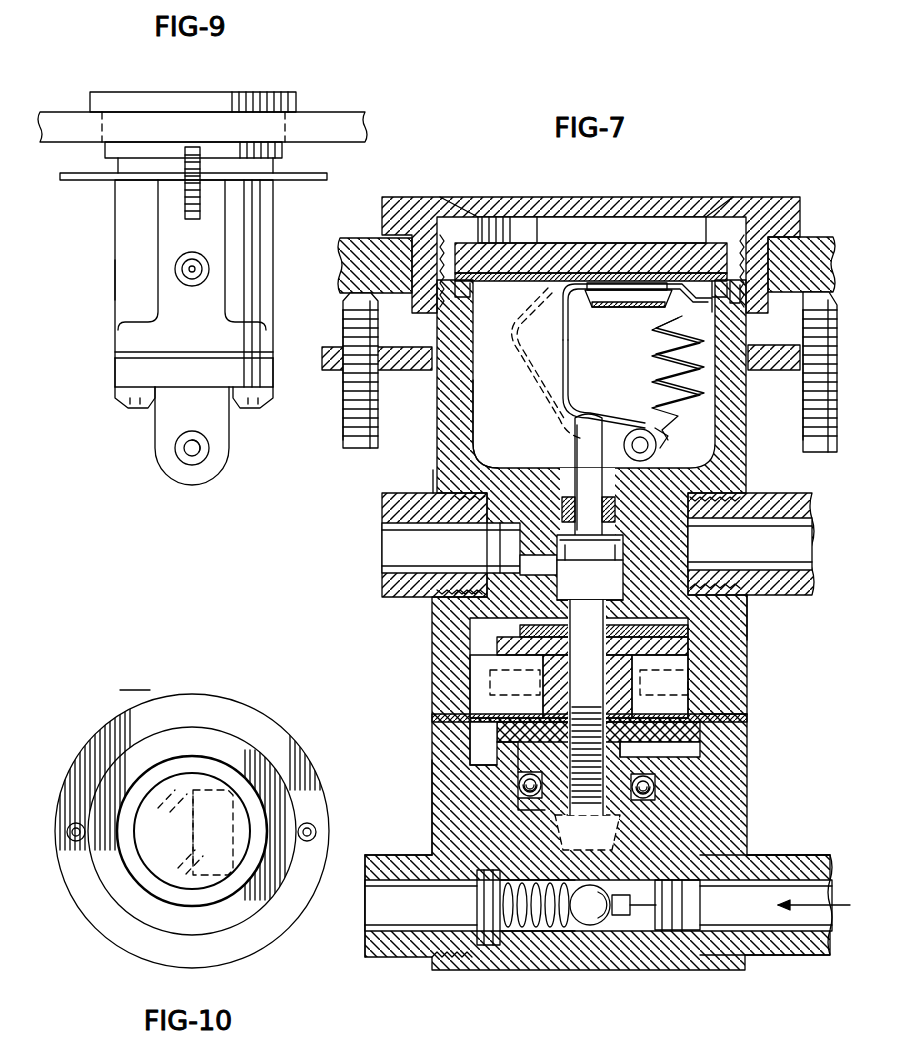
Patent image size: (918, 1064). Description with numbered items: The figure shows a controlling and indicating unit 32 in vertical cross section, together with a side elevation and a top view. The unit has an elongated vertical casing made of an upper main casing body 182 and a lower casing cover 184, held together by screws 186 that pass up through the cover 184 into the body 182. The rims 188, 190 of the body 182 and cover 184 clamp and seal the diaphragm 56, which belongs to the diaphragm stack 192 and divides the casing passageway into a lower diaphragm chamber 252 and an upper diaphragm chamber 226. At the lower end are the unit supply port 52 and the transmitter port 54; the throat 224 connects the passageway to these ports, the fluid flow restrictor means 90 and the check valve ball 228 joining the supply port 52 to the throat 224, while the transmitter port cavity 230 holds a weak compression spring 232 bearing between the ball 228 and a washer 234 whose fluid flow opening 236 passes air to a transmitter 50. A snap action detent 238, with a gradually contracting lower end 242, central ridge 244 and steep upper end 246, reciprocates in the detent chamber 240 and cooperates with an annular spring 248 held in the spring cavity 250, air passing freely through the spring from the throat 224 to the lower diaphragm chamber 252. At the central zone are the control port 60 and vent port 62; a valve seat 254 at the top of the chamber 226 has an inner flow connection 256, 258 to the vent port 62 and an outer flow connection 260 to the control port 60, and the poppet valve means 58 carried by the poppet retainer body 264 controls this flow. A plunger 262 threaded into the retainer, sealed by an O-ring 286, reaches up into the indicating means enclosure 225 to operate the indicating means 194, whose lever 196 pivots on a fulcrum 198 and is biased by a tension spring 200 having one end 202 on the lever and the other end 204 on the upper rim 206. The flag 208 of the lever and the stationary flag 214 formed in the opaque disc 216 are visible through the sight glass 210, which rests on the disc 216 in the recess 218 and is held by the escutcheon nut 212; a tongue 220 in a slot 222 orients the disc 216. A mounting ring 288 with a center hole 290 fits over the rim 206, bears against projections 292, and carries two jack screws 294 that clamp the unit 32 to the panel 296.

In FIG. 9, the controlling and indicating unit 32 is at (83, 266).
In FIG. 7, the controlling and indicating unit 32 is at (350, 490).
In FIG. 10, the controlling and indicating unit 32 is at (100, 700).
In FIG. 7, the transmitter 50 is at (432, 960).
In FIG. 7, the unit supply port 52 is at (705, 958).
In FIG. 9, the transmitter port 54 is at (180, 463).
In FIG. 7, the transmitter port 54 is at (468, 958).
In FIG. 7, the diaphragm 56 is at (470, 692).
In FIG. 7, the poppet valve means 58 is at (497, 646).
In FIG. 7, the unit control port 60 is at (749, 612).
In FIG. 9, the unit vent port 62 is at (183, 256).
In FIG. 7, the unit vent port 62 is at (440, 597).
In FIG. 7, the fluid flow restrictor means 90 is at (635, 915).
In FIG. 9, the main casing body 182 is at (128, 336).
In FIG. 7, the main casing body 182 is at (437, 695).
In FIG. 9, the lower casing cover 184 is at (120, 375).
In FIG. 7, the lower casing cover 184 is at (437, 810).
In FIG. 9, the screws 186 is at (125, 400).
In FIG. 7, the rim of body 188 is at (437, 718).
In FIG. 7, the rim of cover 190 is at (437, 738).
In FIG. 7, the diaphragm stack 192 is at (690, 647).
In FIG. 7, the indicating means 194 is at (550, 362).
In FIG. 7, the indicating lever 196 is at (580, 345).
In FIG. 7, the fulcrum 198 is at (658, 445).
In FIG. 7, the tension spring 200 is at (652, 368).
In FIG. 7, the spring end 202 is at (672, 436).
In FIG. 7, the spring other end 204 is at (696, 284).
In FIG. 7, the upper rim 206 is at (772, 290).
In FIG. 7, the flag 208 is at (612, 300).
In FIG. 7, the sight glass 210 is at (537, 262).
In FIG. 10, the sight glass 210 is at (165, 790).
In FIG. 9, the escutcheon nut 212 is at (285, 100).
In FIG. 7, the escutcheon nut 212 is at (458, 205).
In FIG. 10, the escutcheon nut 212 is at (112, 875).
In FIG. 7, the stationary flag 214 is at (640, 288).
In FIG. 10, the stationary flag 214 is at (245, 765).
In FIG. 7, the opaque disc 216 is at (577, 268).
In FIG. 7, the recess 218 is at (740, 283).
In FIG. 7, the tongue 220 is at (470, 290).
In FIG. 7, the slot 222 is at (438, 318).
In FIG. 7, the throat 224 is at (740, 872).
In FIG. 7, the indicating means enclosure 225 is at (485, 438).
In FIG. 7, the upper diaphragm chamber 226 is at (700, 680).
In FIG. 7, the check valve ball 228 is at (590, 925).
In FIG. 7, the transmitter port cavity 230 is at (548, 928).
In FIG. 7, the compression spring 232 is at (520, 930).
In FIG. 7, the washer 234 is at (480, 870).
In FIG. 9, the fluid flow opening 236 is at (196, 458).
In FIG. 7, the fluid flow opening 236 is at (478, 908).
In FIG. 7, the snap action detent 238 is at (622, 748).
In FIG. 7, the snap action detent chamber 240 is at (620, 833).
In FIG. 7, the detent lower end 242 is at (660, 808).
In FIG. 7, the snap action ridge 244 is at (645, 768).
In FIG. 7, the detent upper end 246 is at (542, 772).
In FIG. 7, the annular spring 248 is at (517, 797).
In FIG. 7, the spring cavity 250 is at (515, 780).
In FIG. 7, the lower diaphragm chamber 252 is at (705, 716).
In FIG. 7, the valve seat 254 is at (520, 631).
In FIG. 7, the inner flow connection 256 is at (590, 586).
In FIG. 9, the inner flow connection 258 is at (183, 271).
In FIG. 7, the inner flow connection 258 is at (520, 570).
In FIG. 7, the outer flow connection 260 is at (690, 592).
In FIG. 7, the plunger 262 is at (574, 455).
In FIG. 7, the poppet retainer body 264 is at (590, 567).
In FIG. 7, the O-ring 286 is at (618, 504).
In FIG. 10, the O-ring 286 is at (208, 800).
In FIG. 9, the mounting ring 288 is at (100, 182).
In FIG. 7, the mounting ring 288 is at (322, 360).
In FIG. 10, the mounting ring 288 is at (100, 732).
In FIG. 7, the center hole 290 is at (772, 345).
In FIG. 7, the projections 292 is at (430, 378).
In FIG. 9, the jack screws 294 is at (185, 160).
In FIG. 7, the jack screws 294 is at (350, 440).
In FIG. 10, the jack screws 294 is at (76, 845).
In FIG. 9, the panel 296 is at (352, 120).
In FIG. 7, the panel 296 is at (335, 262).